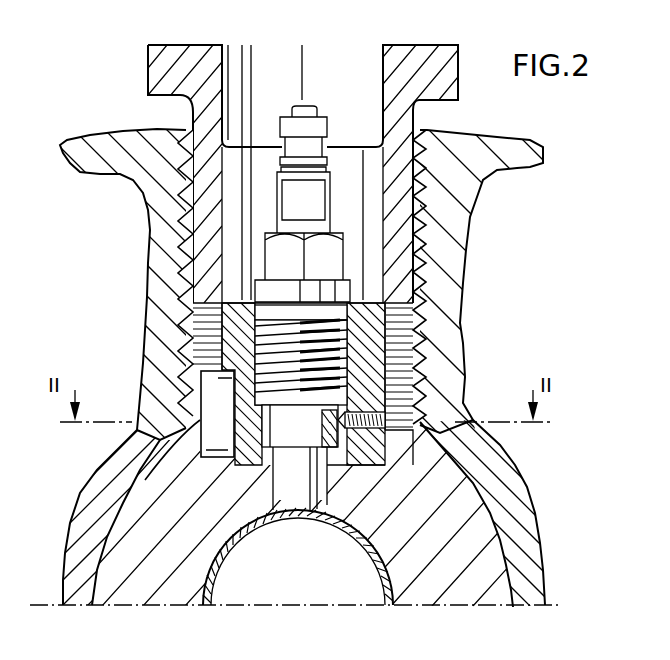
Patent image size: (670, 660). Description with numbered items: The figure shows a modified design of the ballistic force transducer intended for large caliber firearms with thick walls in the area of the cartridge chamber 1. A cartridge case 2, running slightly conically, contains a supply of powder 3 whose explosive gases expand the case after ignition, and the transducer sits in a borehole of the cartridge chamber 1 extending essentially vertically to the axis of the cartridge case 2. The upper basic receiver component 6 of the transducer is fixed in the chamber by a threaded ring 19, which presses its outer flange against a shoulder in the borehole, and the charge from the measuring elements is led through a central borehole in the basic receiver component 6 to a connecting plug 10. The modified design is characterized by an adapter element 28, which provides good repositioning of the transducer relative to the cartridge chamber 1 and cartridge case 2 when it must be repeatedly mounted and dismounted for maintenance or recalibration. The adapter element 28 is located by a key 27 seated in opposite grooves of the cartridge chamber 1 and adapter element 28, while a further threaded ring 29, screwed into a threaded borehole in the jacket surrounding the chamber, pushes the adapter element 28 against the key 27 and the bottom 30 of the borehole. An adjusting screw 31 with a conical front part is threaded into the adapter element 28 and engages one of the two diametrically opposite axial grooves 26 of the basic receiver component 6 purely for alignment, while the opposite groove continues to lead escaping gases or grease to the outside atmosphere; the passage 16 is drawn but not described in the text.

The cartridge chamber 1 is at (467, 558).
The cartridge case 2 is at (372, 541).
The supply of powder 3 is at (311, 560).
The basic receiver component 6 is at (273, 432).
The connecting plug 10 is at (327, 147).
The passage 16 is at (297, 490).
The threaded ring 19 is at (345, 353).
The axial grooves 26 is at (262, 413).
The key 27 is at (213, 382).
The adapter element 28 is at (395, 452).
The threaded ring 29 is at (390, 240).
The bottom of the borehole 30 is at (385, 480).
The adjusting screw 31 is at (418, 430).